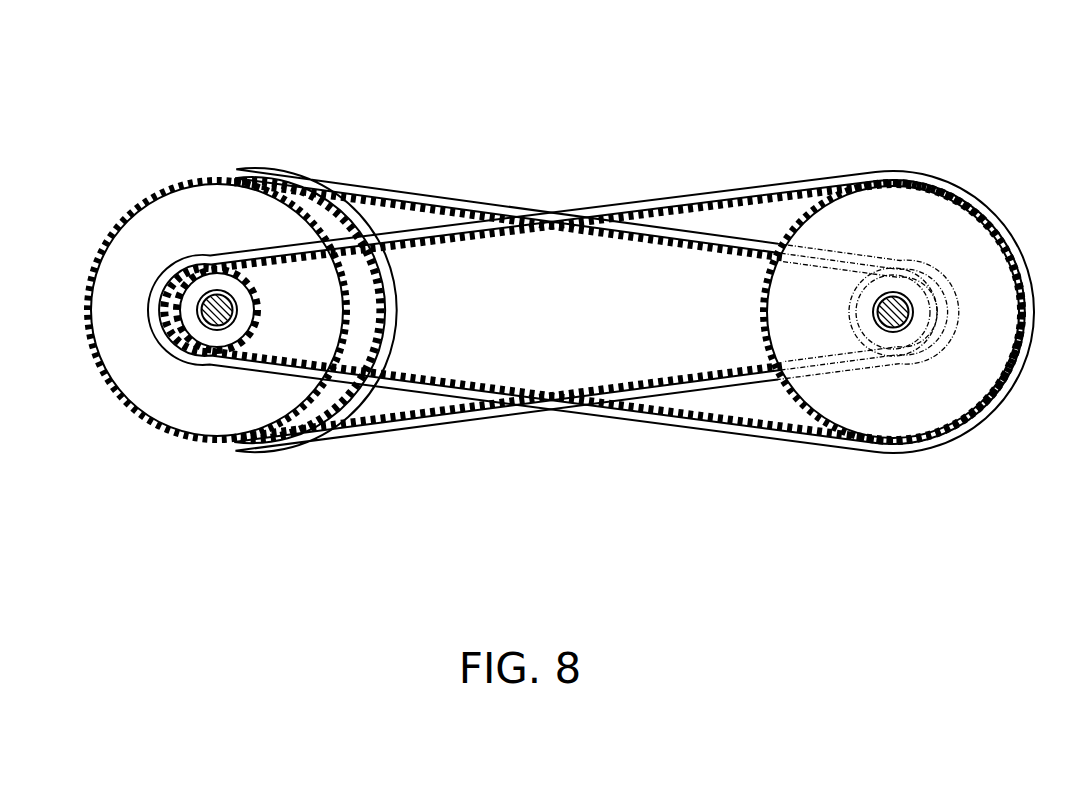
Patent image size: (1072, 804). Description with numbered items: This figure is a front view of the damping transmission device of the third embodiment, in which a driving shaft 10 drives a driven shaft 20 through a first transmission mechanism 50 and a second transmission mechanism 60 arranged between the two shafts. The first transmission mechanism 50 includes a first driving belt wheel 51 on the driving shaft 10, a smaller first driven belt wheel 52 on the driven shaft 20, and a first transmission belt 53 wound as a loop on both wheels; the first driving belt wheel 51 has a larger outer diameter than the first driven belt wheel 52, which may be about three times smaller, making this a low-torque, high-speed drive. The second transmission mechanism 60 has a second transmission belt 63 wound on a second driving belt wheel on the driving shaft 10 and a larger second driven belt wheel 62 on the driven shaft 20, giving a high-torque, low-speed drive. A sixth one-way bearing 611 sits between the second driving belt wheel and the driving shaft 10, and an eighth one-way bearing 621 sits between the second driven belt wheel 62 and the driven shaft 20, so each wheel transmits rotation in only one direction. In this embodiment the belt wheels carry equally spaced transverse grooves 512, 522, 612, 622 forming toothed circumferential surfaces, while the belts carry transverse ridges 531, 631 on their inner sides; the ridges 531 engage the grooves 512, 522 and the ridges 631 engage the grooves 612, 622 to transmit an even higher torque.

The driving shaft 10 is at (200, 328).
The driven shaft 20 is at (893, 330).
The first transmission mechanism 50 is at (343, 154).
The first driving belt wheel 51 is at (270, 265).
The transverse grooves 512 is at (343, 345).
The first driven belt wheel 52 is at (834, 245).
The transverse grooves 522 is at (843, 303).
The first transmission belt 53 is at (596, 281).
The transverse ridges 531 is at (380, 203).
The second transmission mechanism 60 is at (740, 185).
The sixth one-way bearing 611 is at (214, 330).
The transverse grooves 612 is at (258, 322).
The second driven belt wheel 62 is at (908, 353).
The eighth one-way bearing 621 is at (912, 312).
The transverse grooves 622 is at (795, 400).
The second transmission belt 63 is at (591, 338).
The transverse ridges 631 is at (463, 382).